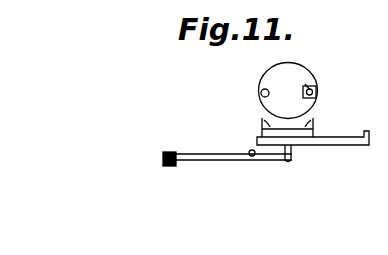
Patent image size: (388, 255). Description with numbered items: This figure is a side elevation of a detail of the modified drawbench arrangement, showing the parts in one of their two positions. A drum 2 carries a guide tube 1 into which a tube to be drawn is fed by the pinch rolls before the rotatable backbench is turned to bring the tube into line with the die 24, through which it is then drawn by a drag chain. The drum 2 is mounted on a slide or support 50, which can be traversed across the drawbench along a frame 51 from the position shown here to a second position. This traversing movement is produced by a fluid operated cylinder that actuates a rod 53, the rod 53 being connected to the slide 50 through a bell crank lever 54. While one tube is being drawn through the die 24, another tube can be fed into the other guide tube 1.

The guide tube 1 is at (317, 96).
The drum 2 is at (314, 91).
The die 24 is at (306, 85).
The slide 50 is at (262, 122).
The frame 51 is at (349, 137).
The rod 53 is at (163, 158).
The bell crank lever 54 is at (266, 160).